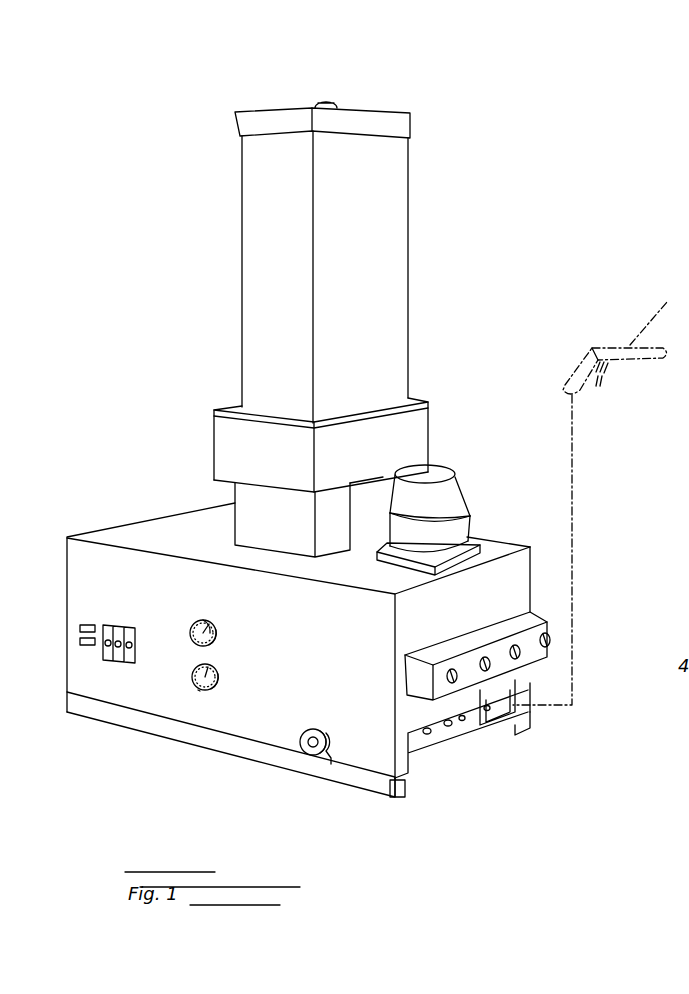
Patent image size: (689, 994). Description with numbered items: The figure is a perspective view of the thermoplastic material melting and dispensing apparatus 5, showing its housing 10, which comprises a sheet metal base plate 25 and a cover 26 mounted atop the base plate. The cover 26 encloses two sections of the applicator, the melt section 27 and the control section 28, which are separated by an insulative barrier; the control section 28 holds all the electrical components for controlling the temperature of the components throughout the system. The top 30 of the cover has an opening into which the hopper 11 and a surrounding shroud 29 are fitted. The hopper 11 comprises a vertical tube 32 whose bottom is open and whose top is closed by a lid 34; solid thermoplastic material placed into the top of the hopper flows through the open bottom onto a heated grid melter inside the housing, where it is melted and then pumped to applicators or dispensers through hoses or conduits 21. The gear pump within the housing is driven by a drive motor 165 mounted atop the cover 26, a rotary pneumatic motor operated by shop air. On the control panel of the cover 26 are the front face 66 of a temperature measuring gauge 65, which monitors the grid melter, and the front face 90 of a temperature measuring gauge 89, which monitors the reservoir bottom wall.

The thermoplastic material melting and dispensing apparatus 5 is at (155, 368).
The hopper 11 is at (242, 305).
The lid 34 is at (375, 121).
The vertical tube 32 is at (325, 277).
The shroud 29 is at (212, 483).
The top of the cover 30 is at (257, 520).
The drive motor 165 is at (443, 503).
The housing 10 is at (513, 590).
The cover 26 is at (231, 667).
The control section 28 is at (82, 665).
The temperature measuring gauge 65 is at (215, 630).
The front face of gauge 66 is at (208, 628).
The temperature measuring gauge 89 is at (220, 672).
The front face of gauge 90 is at (198, 690).
The melt section 27 is at (303, 708).
The base plate 25 is at (397, 800).
The hoses or conduits 21 is at (572, 475).